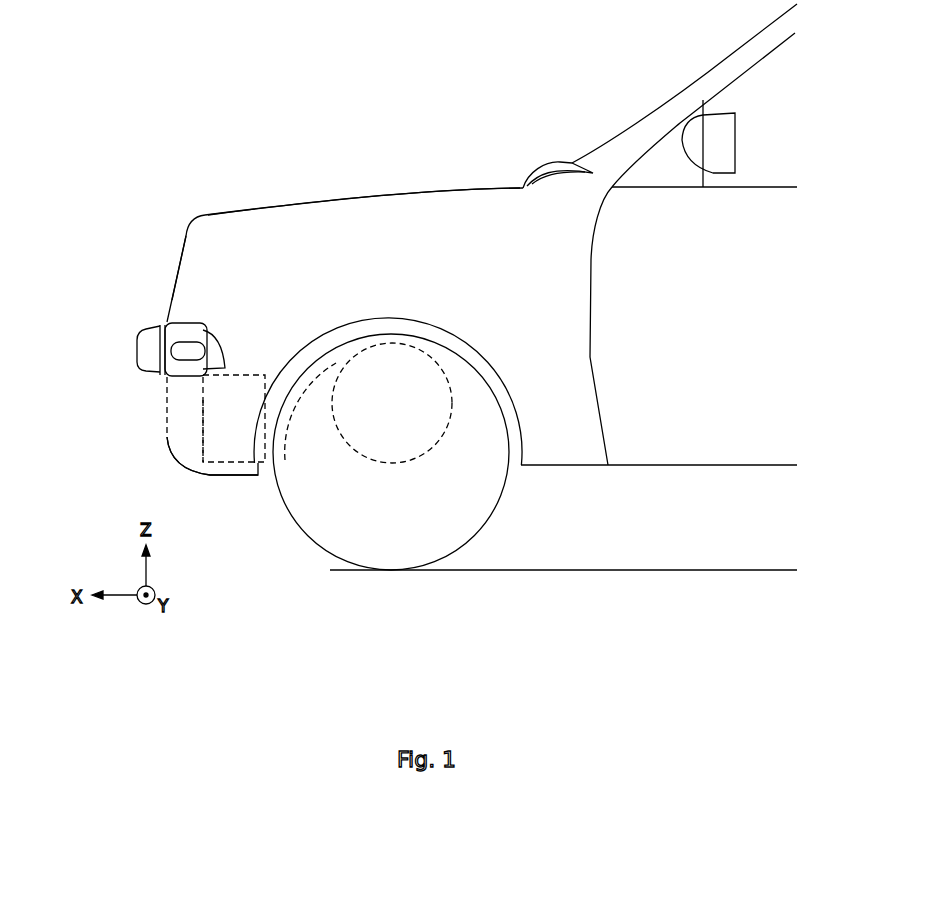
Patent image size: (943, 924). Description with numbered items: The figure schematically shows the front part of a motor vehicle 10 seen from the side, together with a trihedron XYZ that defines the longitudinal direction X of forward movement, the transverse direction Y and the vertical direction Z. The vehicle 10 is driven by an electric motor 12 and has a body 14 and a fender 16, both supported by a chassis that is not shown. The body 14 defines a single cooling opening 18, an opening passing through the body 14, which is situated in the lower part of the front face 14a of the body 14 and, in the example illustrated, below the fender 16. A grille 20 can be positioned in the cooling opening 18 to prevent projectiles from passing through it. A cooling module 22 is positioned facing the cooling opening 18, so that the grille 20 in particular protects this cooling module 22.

The motor vehicle 10 is at (218, 102).
The electric motor 12 is at (342, 442).
The body 14 is at (190, 225).
The front face 14a is at (168, 256).
The fender 16 is at (148, 343).
The cooling opening 18 is at (150, 419).
The grille 20 is at (166, 402).
The cooling module 22 is at (196, 433).